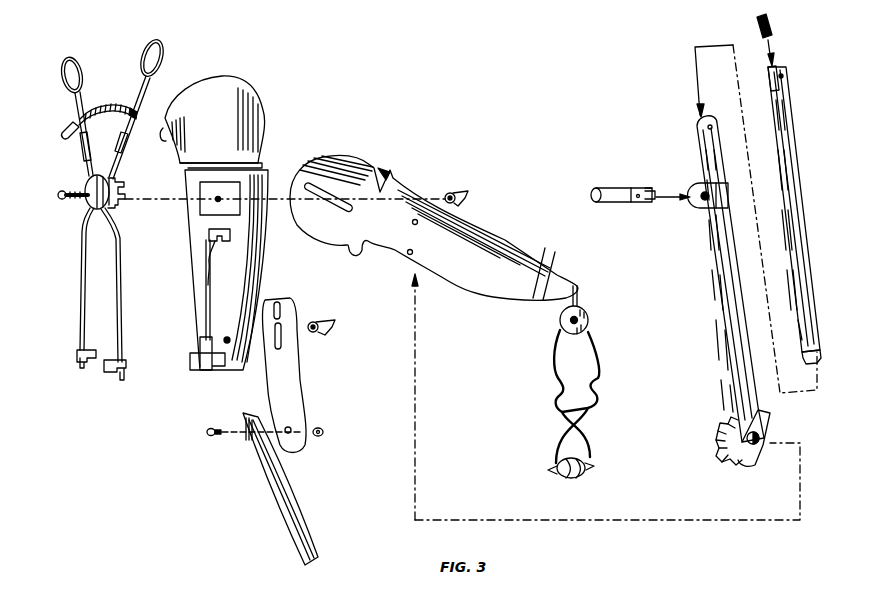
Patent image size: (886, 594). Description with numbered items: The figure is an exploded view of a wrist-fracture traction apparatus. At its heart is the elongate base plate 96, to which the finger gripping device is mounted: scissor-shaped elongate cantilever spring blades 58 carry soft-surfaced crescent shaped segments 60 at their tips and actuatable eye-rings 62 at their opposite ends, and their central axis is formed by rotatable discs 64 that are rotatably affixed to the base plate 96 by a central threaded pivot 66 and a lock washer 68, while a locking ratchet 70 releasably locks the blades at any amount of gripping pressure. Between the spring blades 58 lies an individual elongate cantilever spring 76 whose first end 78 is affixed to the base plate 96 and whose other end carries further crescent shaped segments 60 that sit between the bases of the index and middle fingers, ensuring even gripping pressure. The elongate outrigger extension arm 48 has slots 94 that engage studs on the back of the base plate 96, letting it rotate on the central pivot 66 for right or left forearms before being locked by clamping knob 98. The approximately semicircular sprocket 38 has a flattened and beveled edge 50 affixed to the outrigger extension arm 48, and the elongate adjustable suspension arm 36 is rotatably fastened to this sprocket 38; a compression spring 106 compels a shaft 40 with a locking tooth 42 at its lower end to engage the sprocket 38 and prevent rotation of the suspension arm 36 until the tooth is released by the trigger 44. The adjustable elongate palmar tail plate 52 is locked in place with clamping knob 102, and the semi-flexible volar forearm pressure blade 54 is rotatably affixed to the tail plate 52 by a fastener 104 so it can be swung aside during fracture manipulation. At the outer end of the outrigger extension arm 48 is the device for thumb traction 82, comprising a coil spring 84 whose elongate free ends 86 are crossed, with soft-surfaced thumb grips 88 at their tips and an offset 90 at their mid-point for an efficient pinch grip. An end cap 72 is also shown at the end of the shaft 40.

The elongate adjustable suspension arm 36 is at (712, 253).
The sprocket 38 is at (720, 429).
The shaft 40 is at (793, 143).
The locking tooth 42 is at (737, 417).
The trigger 44 is at (615, 188).
The elongate outrigger extension arm 48 is at (467, 226).
The flattened and beveled edge 50 is at (768, 426).
The elongate palmar tail plate 52 is at (297, 388).
The semi-flexible volar forearm pressure blade 54 is at (287, 498).
The elongate cantilever spring blades 58 is at (80, 283).
The soft-surfaced crescent shaped segments 60 is at (78, 357).
The actuatable eye-rings 62 is at (79, 58).
The rotatable discs 64 is at (88, 211).
The central threaded pivot 66 is at (58, 200).
The lock washer 68 is at (127, 185).
The locking ratchet 70 is at (97, 104).
The end cap 72 is at (822, 356).
The individual elongate cantilever spring 76 is at (208, 278).
The first end of the individual elongate cantilever spring 78 is at (208, 247).
The device for thumb traction 82 is at (593, 393).
The coil spring 84 is at (589, 322).
The elongate free ends of the coil spring 86 is at (558, 434).
The soft-surfaced thumb grips 88 is at (581, 478).
The offset 90 is at (557, 384).
The slot 94 is at (314, 182).
The elongate base plate 96 is at (199, 225).
The clamping knob 98 is at (462, 193).
The clamping knob 102 is at (337, 332).
The fastener 104 is at (207, 436).
The compression spring 106 is at (776, 27).